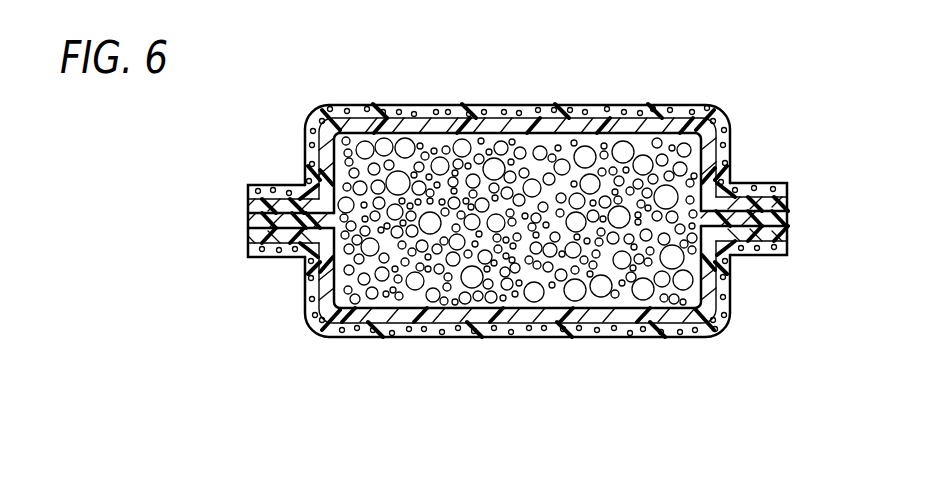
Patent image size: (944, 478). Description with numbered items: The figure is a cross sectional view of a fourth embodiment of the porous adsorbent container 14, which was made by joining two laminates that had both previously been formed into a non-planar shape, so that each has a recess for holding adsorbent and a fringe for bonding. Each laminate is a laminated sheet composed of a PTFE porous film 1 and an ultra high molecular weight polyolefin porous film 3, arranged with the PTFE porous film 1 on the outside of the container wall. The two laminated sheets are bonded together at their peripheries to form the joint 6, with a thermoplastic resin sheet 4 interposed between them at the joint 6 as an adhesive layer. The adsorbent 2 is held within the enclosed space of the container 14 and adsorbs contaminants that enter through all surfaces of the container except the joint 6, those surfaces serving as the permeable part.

The adsorbent container 14 is at (452, 80).
The PTFE porous film 1 is at (704, 105).
The adsorbent 2 is at (522, 160).
The ultra high molecular weight polyolefin porous film 3 is at (783, 203).
The thermoplastic resin sheet 4 is at (250, 220).
The joint 6 is at (272, 185).